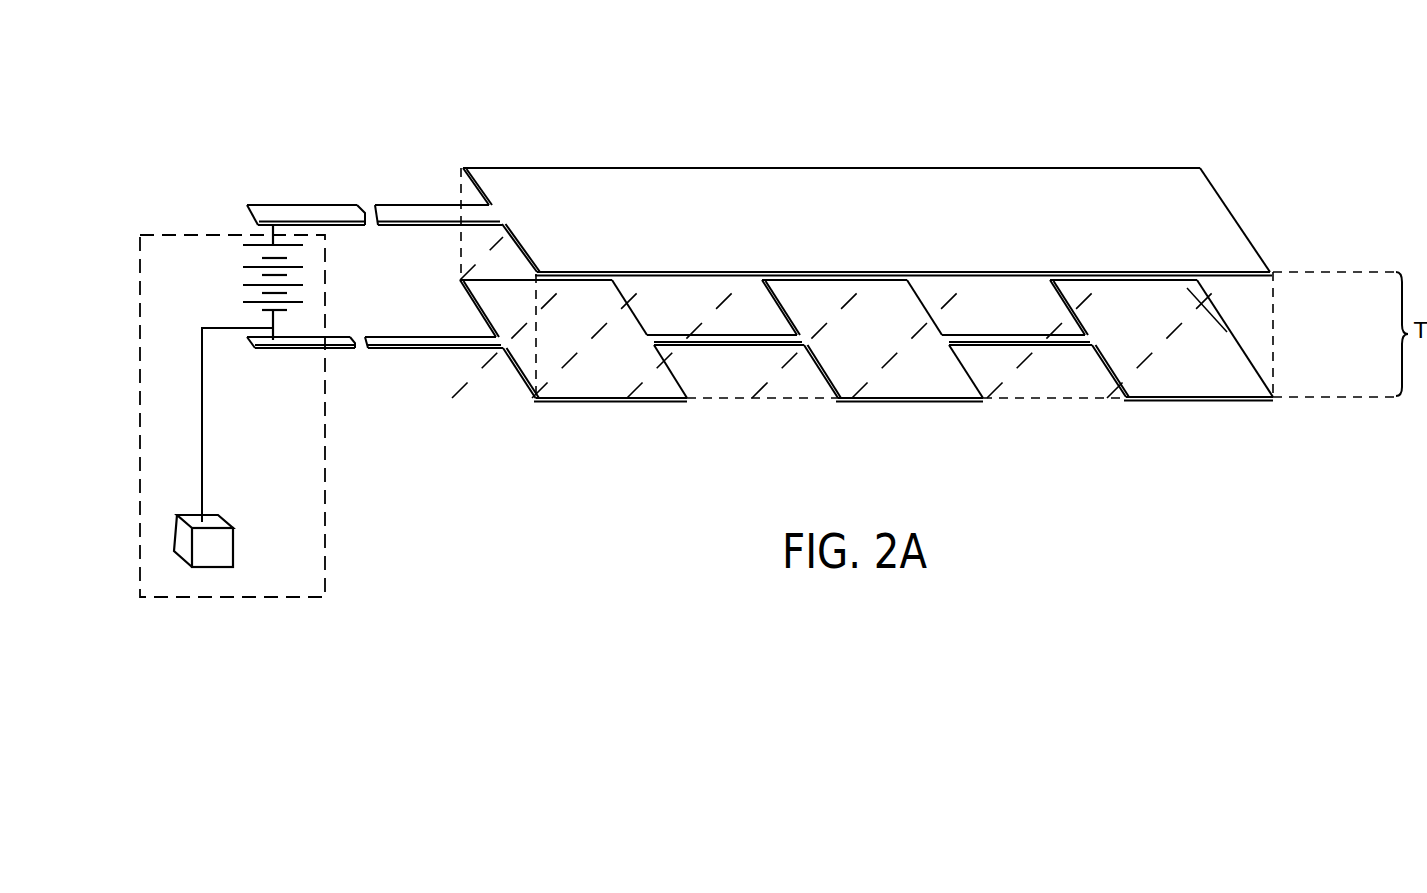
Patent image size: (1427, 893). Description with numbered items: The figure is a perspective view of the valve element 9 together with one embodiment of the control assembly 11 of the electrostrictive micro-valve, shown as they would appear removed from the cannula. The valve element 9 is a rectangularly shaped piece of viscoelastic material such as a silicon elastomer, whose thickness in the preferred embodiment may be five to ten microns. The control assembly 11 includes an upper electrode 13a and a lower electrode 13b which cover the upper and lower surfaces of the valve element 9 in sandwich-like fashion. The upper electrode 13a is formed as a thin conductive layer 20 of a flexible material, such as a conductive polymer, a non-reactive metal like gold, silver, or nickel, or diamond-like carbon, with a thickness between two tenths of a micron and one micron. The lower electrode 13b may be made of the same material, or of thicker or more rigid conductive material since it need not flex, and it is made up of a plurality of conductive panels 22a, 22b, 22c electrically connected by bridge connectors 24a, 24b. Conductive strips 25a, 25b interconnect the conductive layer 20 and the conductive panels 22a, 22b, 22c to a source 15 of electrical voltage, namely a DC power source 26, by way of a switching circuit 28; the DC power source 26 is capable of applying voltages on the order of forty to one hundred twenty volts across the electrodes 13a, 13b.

The control assembly 11 is at (312, 132).
The upper electrode 13a is at (596, 142).
The lower electrode 13b is at (578, 416).
The conductive layer 20 is at (781, 190).
The conductive panel 22a is at (650, 388).
The conductive panel 22b is at (937, 383).
The conductive panel 22c is at (1225, 377).
The bridge connector 24a is at (721, 340).
The bridge connector 24b is at (1007, 335).
The conductive strip 25a is at (400, 205).
The conductive strip 25b is at (416, 340).
The valve element 9 is at (910, 365).
The source of electrical voltage 15 is at (221, 232).
The DC power source 26 is at (248, 285).
The switching circuit 28 is at (227, 540).